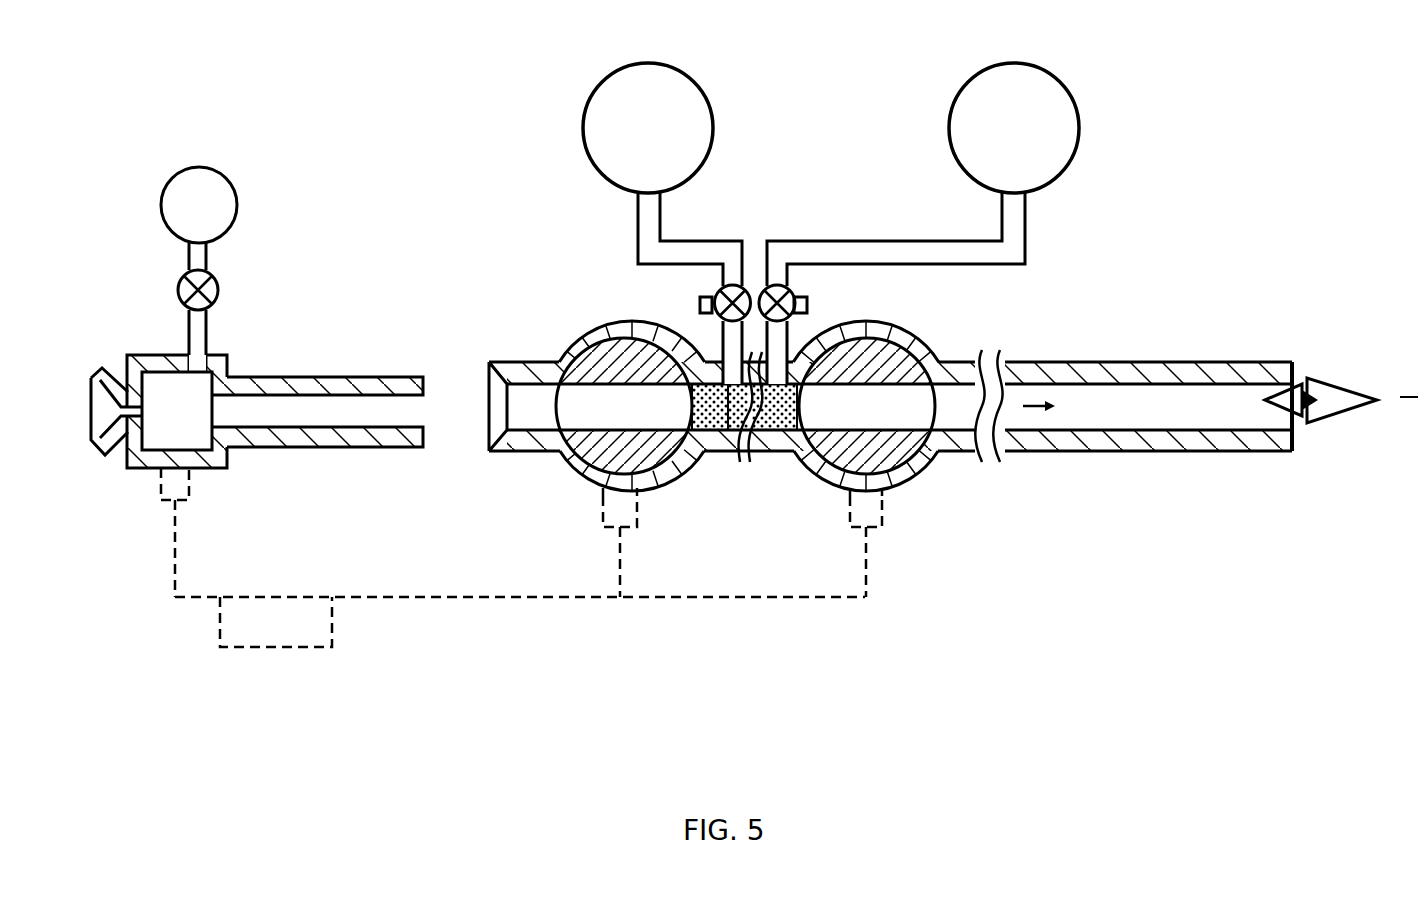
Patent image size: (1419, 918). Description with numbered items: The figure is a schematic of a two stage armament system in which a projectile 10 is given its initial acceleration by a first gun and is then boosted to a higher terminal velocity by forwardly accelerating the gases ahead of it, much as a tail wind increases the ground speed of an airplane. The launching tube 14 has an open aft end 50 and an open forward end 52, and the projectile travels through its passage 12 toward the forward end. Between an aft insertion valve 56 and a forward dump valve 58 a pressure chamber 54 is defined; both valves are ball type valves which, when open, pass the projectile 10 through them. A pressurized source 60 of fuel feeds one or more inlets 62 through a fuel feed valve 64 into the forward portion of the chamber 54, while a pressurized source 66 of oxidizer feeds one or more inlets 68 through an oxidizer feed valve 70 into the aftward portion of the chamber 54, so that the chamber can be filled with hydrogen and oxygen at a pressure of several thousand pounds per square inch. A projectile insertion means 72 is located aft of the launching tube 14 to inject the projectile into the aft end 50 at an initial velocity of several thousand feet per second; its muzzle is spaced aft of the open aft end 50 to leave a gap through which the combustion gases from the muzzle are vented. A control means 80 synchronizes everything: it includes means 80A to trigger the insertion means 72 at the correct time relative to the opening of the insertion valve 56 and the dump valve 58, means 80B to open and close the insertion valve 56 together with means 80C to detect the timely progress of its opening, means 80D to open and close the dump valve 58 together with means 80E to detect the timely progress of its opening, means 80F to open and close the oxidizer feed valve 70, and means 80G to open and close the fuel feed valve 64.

The projectile 10 is at (1340, 386).
The propellant flow passage 12 is at (1153, 382).
The launching tube 14 is at (1078, 362).
The open aft end 50 is at (490, 422).
The open forward end 52 is at (1293, 362).
The pressure chamber 54 is at (786, 452).
The aft insertion valve 56 is at (598, 386).
The forward dump valve 58 is at (878, 430).
The pressurized source of fuel 60 is at (1080, 132).
The fuel inlets 62 is at (748, 446).
The fuel feed valve 64 is at (795, 292).
The pressurized source of oxidizer 66 is at (714, 128).
The oxidizer inlets 68 is at (712, 455).
The oxidizer feed valve 70 is at (722, 322).
The projectile insertion means 72 is at (153, 357).
The control means 80 is at (333, 633).
The insertion trigger means 80A is at (160, 492).
The insertion valve actuating means 80B is at (637, 528).
The insertion valve progress detecting means 80C is at (600, 512).
The dump valve actuating means 80D is at (885, 518).
The dump valve progress detecting means 80E is at (848, 514).
The oxidizer feed valve actuating means 80F is at (700, 304).
The fuel feed valve actuating means 80G is at (812, 300).